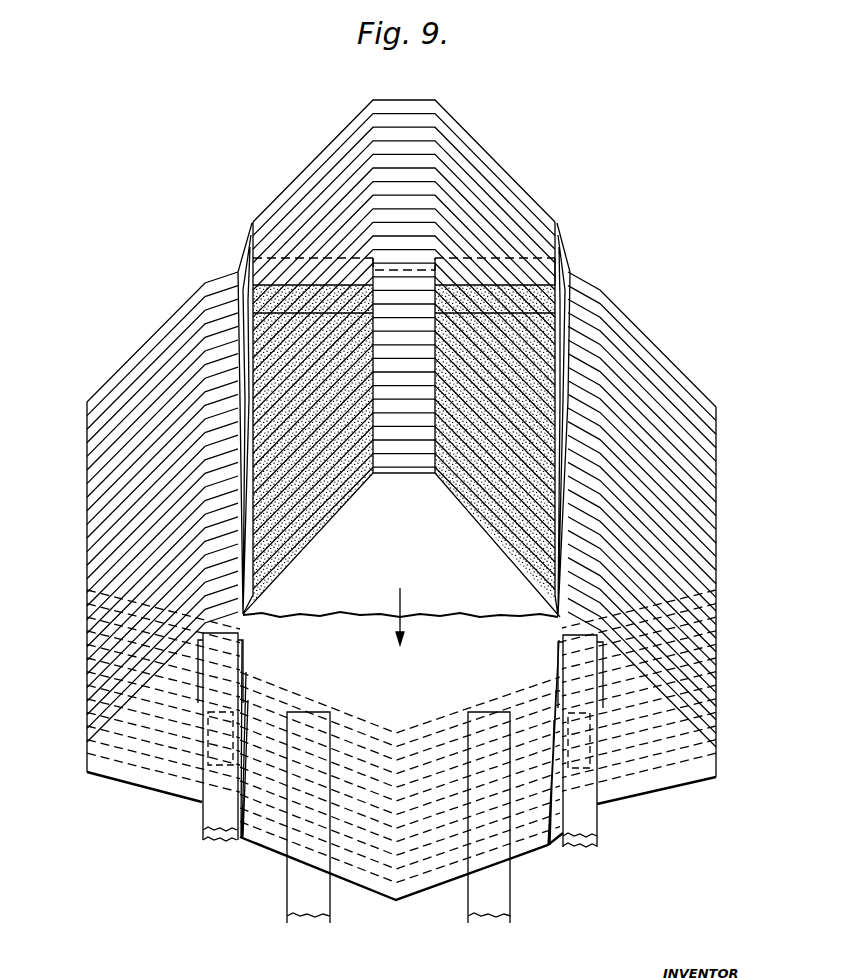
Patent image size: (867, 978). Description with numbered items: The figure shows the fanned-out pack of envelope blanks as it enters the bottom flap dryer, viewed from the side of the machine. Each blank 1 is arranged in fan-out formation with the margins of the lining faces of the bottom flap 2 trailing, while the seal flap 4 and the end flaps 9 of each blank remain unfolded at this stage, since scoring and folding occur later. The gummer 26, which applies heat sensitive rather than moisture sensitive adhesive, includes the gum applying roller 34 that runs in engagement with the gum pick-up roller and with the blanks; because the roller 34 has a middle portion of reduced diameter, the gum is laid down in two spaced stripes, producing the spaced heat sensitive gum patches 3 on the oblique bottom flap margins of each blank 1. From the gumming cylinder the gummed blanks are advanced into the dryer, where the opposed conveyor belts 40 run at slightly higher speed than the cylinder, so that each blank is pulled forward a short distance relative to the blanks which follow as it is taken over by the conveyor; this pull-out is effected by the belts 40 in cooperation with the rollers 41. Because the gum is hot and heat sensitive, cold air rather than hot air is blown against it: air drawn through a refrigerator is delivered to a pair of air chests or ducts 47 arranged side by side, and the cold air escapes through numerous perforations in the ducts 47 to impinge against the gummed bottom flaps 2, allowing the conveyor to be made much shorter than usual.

The blank 1 is at (306, 155).
The bottom flap 2 is at (290, 184).
The heat sensitive gum patches 3 is at (437, 477).
The seal flap 4 is at (373, 866).
The end flaps 9 is at (83, 487).
The gummer 26 is at (509, 249).
The gum applying roller 34 is at (530, 257).
The conveyor belts 40 is at (207, 837).
The rollers 41 is at (207, 740).
The air chests or ducts 47 is at (294, 909).